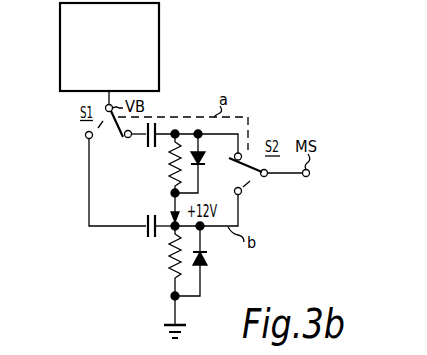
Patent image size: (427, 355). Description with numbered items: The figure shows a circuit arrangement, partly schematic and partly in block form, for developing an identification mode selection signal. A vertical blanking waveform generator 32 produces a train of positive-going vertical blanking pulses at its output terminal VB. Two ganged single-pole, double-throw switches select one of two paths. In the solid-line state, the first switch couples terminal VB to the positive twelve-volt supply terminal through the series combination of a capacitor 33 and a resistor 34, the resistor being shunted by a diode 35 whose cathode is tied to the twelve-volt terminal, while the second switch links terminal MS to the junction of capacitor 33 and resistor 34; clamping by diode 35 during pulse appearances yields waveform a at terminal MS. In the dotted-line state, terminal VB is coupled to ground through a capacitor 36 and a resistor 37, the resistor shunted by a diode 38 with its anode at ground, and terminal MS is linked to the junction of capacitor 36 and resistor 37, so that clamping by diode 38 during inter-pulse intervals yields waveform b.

The vertical blanking waveform generator 32 is at (160, 37).
The capacitor 33 is at (152, 148).
The resistor 34 is at (173, 180).
The diode 35 is at (206, 163).
The capacitor 36 is at (146, 232).
The resistor 37 is at (172, 279).
The diode 38 is at (207, 257).